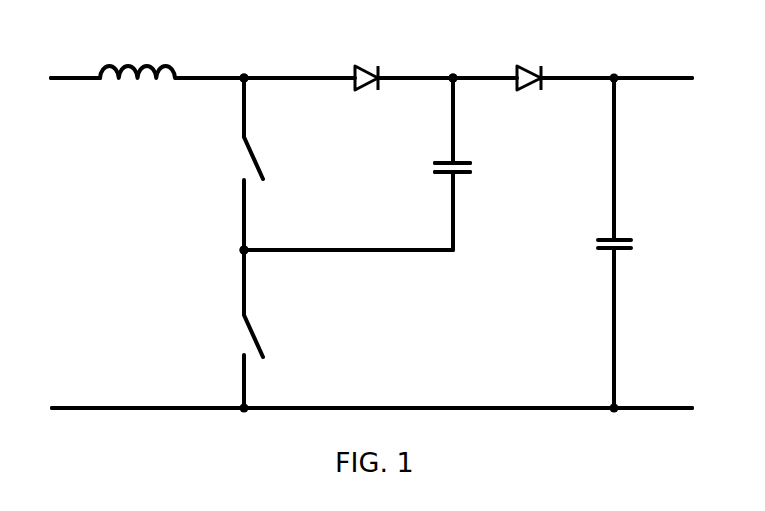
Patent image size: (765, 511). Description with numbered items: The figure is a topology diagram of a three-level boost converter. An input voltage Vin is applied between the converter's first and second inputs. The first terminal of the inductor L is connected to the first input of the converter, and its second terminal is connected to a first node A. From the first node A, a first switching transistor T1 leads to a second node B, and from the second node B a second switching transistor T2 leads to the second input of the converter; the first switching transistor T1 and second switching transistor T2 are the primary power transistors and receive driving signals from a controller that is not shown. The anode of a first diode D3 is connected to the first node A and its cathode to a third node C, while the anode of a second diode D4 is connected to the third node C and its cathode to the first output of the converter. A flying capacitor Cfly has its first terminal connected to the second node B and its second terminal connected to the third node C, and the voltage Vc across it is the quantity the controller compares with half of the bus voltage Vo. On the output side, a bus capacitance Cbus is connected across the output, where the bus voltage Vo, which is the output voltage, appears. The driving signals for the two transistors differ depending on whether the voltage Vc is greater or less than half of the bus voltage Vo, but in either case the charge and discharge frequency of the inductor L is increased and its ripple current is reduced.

The inductor L is at (137, 55).
The first node A is at (248, 62).
The first diode D3 is at (372, 61).
The third node C is at (454, 62).
The second diode D4 is at (533, 61).
The first switching transistor T1 is at (217, 164).
The second node B is at (227, 250).
The second switching transistor T2 is at (215, 329).
The flying capacitor Cfly is at (474, 164).
The voltage of the flying capacitor Vc is at (431, 171).
The bus capacitance Cbus is at (589, 243).
The input voltage Vin is at (68, 243).
The bus voltage Vo is at (659, 243).